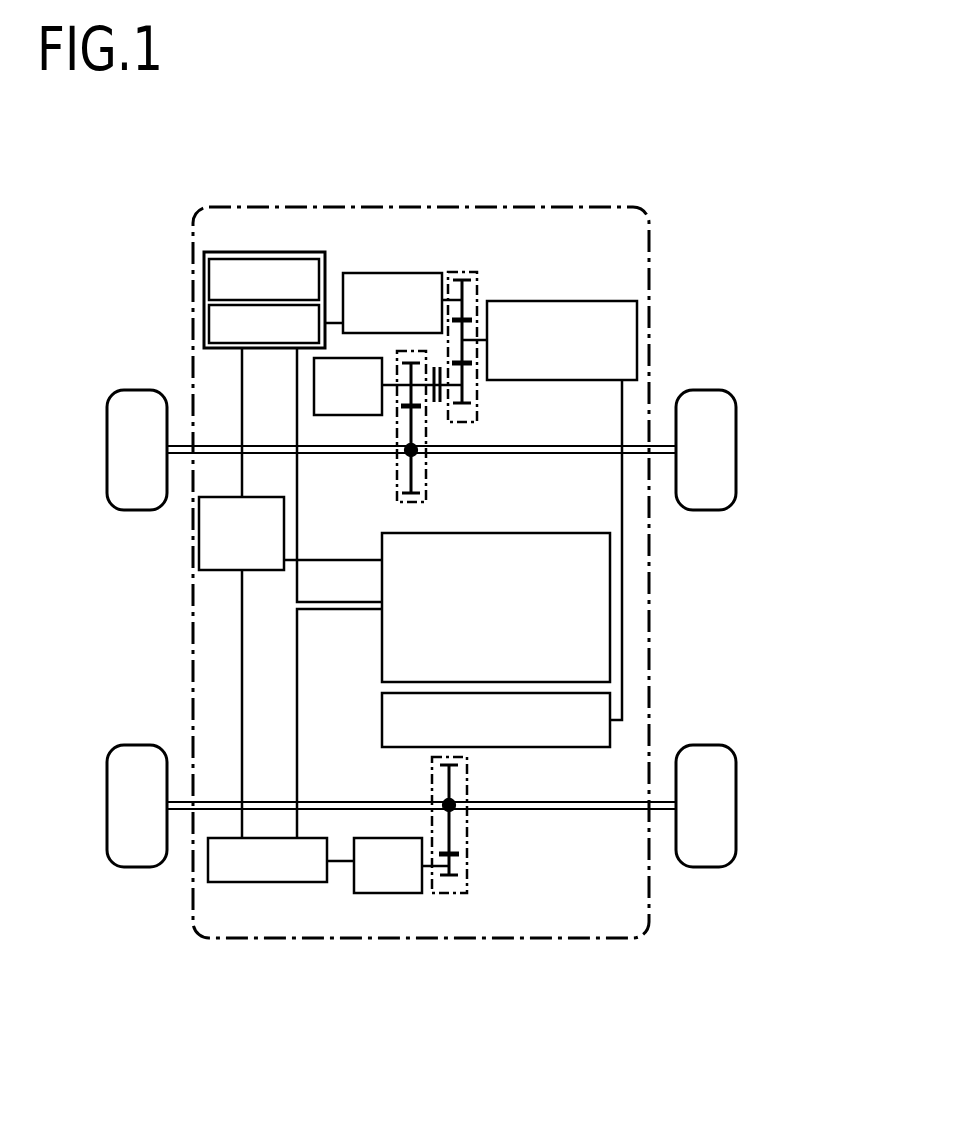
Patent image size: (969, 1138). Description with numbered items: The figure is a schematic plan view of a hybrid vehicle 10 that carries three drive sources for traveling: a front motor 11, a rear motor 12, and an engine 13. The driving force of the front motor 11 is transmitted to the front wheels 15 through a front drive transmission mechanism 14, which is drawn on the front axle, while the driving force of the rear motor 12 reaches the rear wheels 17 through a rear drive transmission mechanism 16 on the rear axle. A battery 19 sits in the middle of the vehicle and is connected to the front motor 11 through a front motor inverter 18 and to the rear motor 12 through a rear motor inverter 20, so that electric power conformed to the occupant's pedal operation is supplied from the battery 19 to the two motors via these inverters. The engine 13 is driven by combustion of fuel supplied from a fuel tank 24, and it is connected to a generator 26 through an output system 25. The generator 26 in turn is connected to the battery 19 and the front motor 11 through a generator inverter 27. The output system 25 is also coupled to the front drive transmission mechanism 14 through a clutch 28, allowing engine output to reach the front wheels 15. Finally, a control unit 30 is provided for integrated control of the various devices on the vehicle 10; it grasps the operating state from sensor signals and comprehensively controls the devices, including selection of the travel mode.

The hybrid vehicle 10 is at (752, 205).
The front motor 11 is at (314, 375).
The rear motor 12 is at (385, 893).
The engine 13 is at (636, 313).
The front drive transmission mechanism 14 is at (397, 462).
The front wheels 15 is at (107, 423).
The rear drive transmission mechanism 16 is at (466, 838).
The rear wheels 17 is at (115, 783).
The front motor inverter 18 is at (209, 315).
The battery 19 is at (382, 643).
The rear motor inverter 20 is at (208, 866).
The fuel tank 24 is at (550, 747).
The output system 25 is at (477, 290).
The generator 26 is at (340, 290).
The generator inverter 27 is at (209, 275).
The clutch 28 is at (440, 406).
The control unit 30 is at (199, 540).